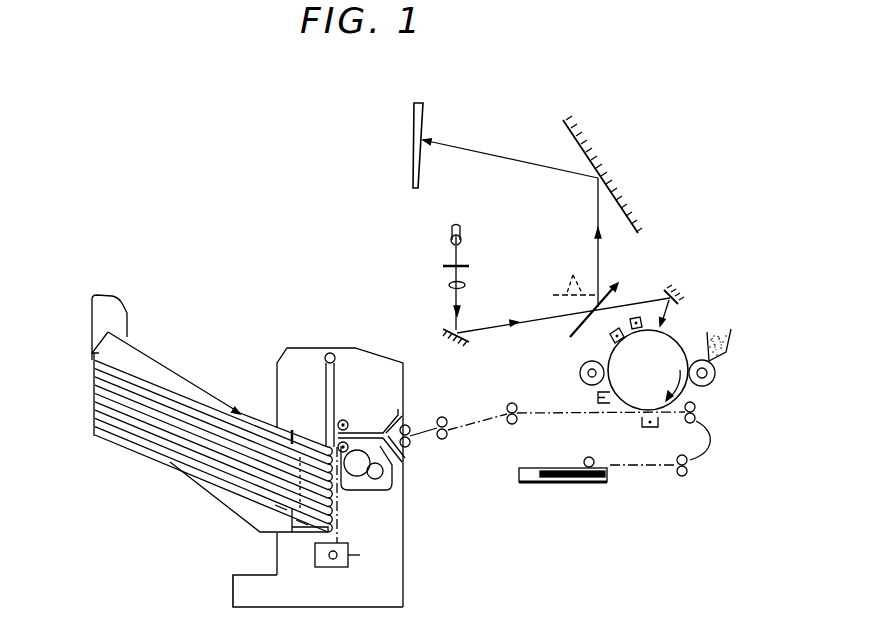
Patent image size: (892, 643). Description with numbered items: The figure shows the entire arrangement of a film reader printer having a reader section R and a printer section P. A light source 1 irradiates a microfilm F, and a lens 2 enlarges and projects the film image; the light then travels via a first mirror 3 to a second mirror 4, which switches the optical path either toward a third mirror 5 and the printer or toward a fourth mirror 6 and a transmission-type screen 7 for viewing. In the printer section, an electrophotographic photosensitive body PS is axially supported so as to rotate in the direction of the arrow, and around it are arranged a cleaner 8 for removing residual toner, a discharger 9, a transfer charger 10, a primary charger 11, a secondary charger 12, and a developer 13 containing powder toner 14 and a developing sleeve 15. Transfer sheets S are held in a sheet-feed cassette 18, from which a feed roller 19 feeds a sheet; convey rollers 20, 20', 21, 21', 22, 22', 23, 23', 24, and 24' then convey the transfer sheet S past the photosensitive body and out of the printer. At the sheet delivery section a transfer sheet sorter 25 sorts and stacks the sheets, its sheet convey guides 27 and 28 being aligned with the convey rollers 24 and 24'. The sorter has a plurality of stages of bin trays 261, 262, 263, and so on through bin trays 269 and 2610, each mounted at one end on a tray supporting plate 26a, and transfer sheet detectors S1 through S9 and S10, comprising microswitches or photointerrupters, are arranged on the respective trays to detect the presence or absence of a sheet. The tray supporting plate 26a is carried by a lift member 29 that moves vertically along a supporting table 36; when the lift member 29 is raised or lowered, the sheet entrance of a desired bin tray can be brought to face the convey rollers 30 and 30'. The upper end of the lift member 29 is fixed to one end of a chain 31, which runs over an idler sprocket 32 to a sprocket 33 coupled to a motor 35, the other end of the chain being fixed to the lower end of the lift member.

The reader section R is at (452, 104).
The printer section P is at (727, 288).
The light source 1 is at (450, 240).
The microfilm F is at (470, 263).
The lens 2 is at (466, 285).
The first mirror 3 is at (447, 330).
The second mirror 4 is at (585, 301).
The third mirror 5 is at (667, 291).
The fourth mirror 6 is at (563, 124).
The transmission-type screen 7 is at (415, 110).
The electrophotographic photosensitive body PS is at (677, 343).
The cleaner 8 is at (579, 367).
The discharger 9 is at (597, 395).
The transfer charger 10 is at (648, 429).
The primary charger 11 is at (610, 338).
The secondary charger 12 is at (634, 316).
The developer 13 is at (727, 353).
The powder toner 14 is at (717, 330).
The developing sleeve 15 is at (716, 383).
The sheet-feed cassette 18 is at (558, 483).
The transfer sheet S is at (558, 470).
The feed roller 19 is at (588, 456).
The convey roller 20 is at (708, 470).
The convey roller 20' is at (685, 492).
The convey roller 21 is at (632, 413).
The convey roller 21' is at (723, 436).
The convey roller 22 is at (487, 398).
The convey roller 22' is at (512, 441).
The convey roller 23 is at (439, 405).
The convey roller 23' is at (462, 455).
The convey roller 24 is at (417, 408).
The convey roller 24' is at (424, 464).
The transfer sheet sorter 25 is at (221, 332).
The tray supporting plate 26a is at (227, 499).
The bin tray 261 is at (100, 354).
The bin tray 262 is at (95, 367).
The bin tray 263 is at (93, 378).
The bin tray 269 is at (93, 421).
The bin tray 2610 is at (110, 436).
The transfer sheet detector S1 is at (310, 447).
The transfer sheet detector S9 is at (303, 523).
The transfer sheet detector S10 is at (280, 508).
The sheet convey guide 27 is at (372, 432).
The sheet convey guide 28 is at (402, 490).
The lift member 29 is at (293, 445).
The convey roller 30 is at (353, 403).
The convey roller 30' is at (365, 482).
The chain 31 is at (298, 363).
The idler sprocket 32 is at (330, 352).
The sprocket 33 is at (334, 568).
The motor 35 is at (360, 555).
The supporting table 36 is at (235, 593).